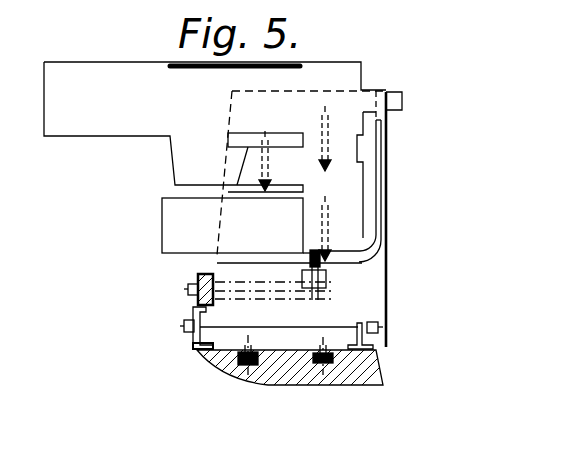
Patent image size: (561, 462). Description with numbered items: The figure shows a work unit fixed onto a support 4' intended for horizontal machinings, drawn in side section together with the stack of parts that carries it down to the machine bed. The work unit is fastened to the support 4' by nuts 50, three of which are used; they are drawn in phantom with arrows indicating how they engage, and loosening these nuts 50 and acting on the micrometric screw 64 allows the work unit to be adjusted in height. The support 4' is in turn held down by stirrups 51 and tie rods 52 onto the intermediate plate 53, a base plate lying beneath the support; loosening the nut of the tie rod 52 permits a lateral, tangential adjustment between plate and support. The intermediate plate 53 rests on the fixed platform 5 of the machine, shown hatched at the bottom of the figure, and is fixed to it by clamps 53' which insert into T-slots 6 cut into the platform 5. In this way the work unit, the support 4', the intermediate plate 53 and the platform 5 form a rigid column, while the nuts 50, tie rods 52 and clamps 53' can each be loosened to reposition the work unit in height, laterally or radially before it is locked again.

The support 4' is at (385, 219).
The nuts 50 is at (322, 252).
The micrometric screw 64 is at (198, 275).
The tie rods 52 is at (190, 320).
The stirrups 51 is at (192, 343).
The intermediate plate 53 is at (318, 294).
The fixed platform 5 is at (362, 368).
The clamps 53' is at (261, 384).
The T-slots 6 is at (255, 365).